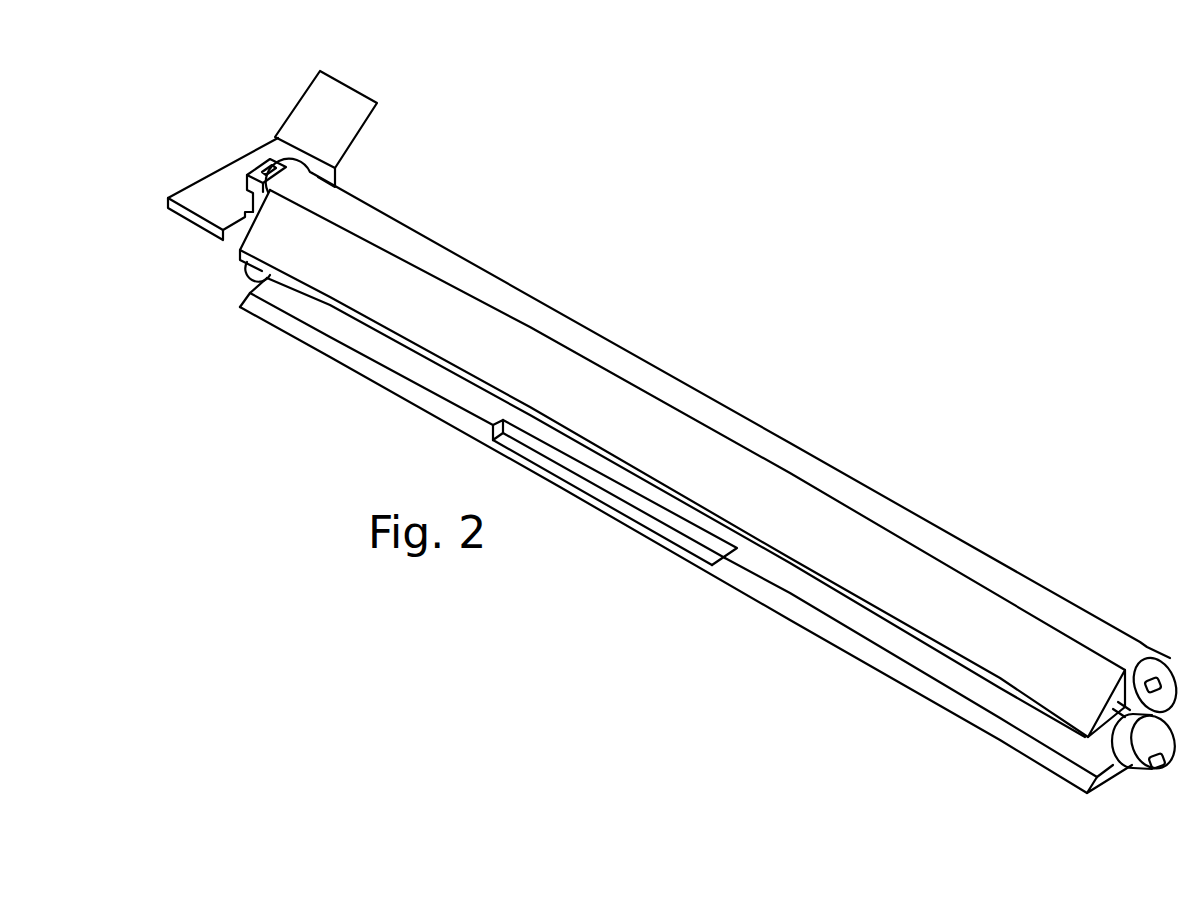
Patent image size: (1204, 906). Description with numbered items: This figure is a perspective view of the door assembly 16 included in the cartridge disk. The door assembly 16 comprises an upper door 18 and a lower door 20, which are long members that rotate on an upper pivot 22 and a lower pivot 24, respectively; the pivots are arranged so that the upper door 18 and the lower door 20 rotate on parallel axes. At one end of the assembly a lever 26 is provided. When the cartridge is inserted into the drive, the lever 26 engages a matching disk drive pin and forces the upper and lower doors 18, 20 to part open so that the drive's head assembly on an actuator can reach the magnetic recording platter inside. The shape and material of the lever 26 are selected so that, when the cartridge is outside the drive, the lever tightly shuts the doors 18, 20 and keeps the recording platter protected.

The door assembly 16 is at (657, 266).
The upper door 18 is at (897, 557).
The lower door 20 is at (956, 727).
The upper pivot 22 is at (1170, 684).
The lower pivot 24 is at (1170, 762).
The lever 26 is at (355, 90).